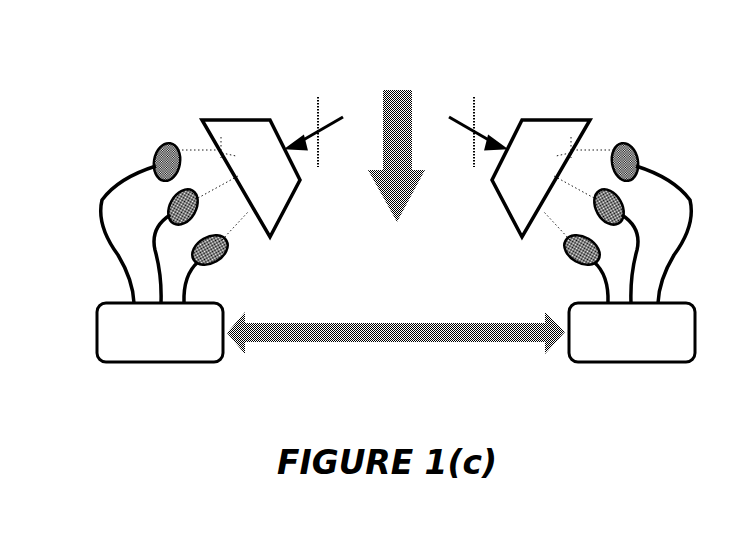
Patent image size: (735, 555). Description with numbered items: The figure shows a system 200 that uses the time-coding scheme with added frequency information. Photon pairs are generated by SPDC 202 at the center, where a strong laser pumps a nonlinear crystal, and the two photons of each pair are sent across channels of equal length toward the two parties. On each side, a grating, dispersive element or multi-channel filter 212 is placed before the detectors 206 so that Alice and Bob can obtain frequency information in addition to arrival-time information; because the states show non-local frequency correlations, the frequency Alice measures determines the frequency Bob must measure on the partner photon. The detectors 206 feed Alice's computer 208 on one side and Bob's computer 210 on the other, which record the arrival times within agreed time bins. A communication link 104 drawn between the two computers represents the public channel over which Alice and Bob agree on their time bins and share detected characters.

The system 200 is at (385, 47).
The SPDC 202 is at (363, 130).
The grating, dispersive element or multi-channel filter 212 is at (240, 118).
The detectors 206 is at (212, 232).
The classical communication channel 104 is at (262, 307).
The Alice's computer 208 is at (152, 365).
The Bob's computer 210 is at (620, 365).